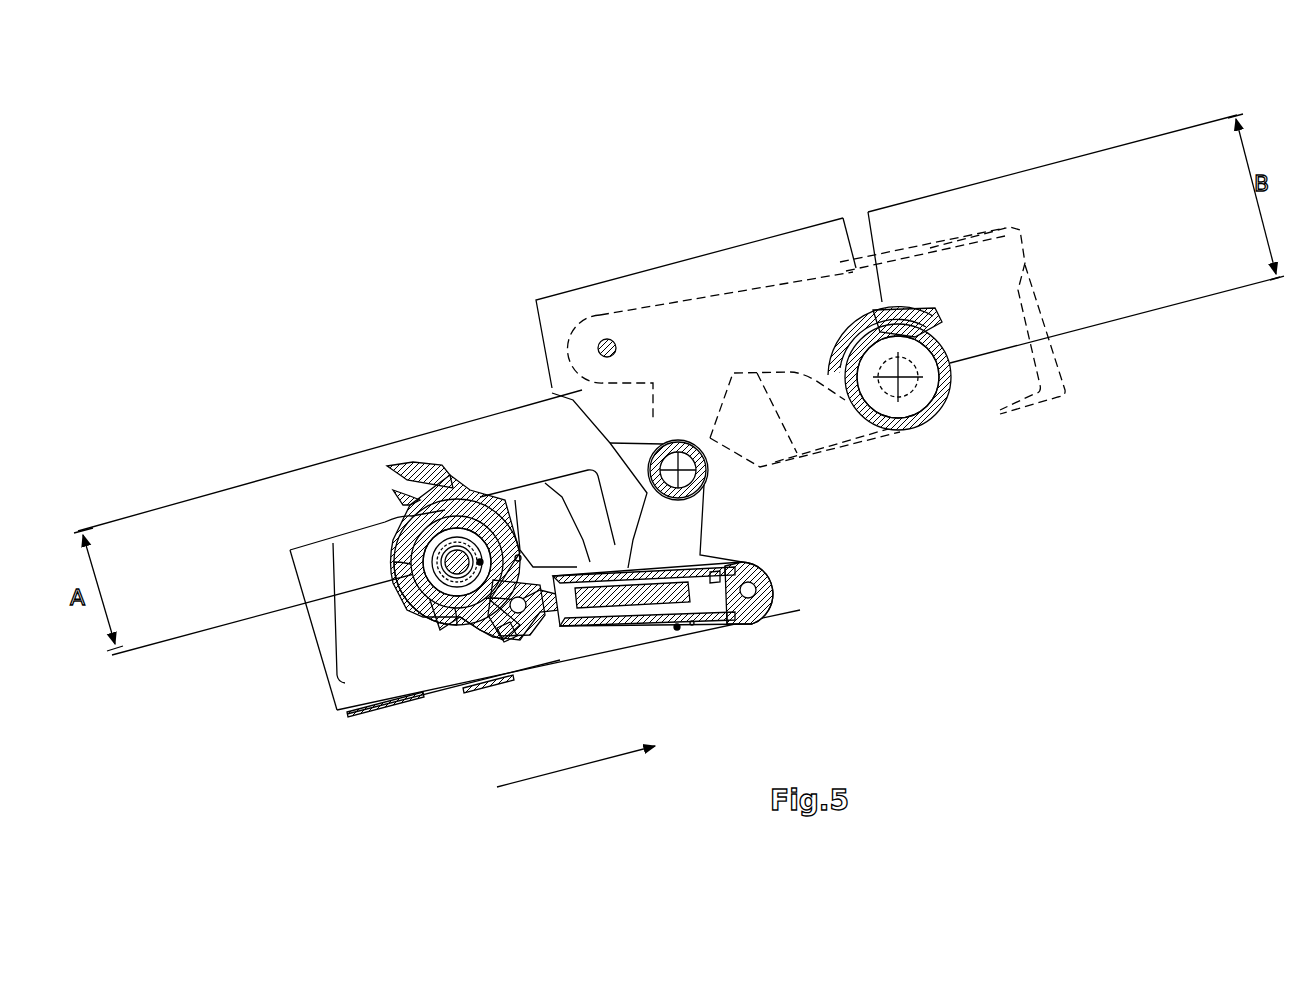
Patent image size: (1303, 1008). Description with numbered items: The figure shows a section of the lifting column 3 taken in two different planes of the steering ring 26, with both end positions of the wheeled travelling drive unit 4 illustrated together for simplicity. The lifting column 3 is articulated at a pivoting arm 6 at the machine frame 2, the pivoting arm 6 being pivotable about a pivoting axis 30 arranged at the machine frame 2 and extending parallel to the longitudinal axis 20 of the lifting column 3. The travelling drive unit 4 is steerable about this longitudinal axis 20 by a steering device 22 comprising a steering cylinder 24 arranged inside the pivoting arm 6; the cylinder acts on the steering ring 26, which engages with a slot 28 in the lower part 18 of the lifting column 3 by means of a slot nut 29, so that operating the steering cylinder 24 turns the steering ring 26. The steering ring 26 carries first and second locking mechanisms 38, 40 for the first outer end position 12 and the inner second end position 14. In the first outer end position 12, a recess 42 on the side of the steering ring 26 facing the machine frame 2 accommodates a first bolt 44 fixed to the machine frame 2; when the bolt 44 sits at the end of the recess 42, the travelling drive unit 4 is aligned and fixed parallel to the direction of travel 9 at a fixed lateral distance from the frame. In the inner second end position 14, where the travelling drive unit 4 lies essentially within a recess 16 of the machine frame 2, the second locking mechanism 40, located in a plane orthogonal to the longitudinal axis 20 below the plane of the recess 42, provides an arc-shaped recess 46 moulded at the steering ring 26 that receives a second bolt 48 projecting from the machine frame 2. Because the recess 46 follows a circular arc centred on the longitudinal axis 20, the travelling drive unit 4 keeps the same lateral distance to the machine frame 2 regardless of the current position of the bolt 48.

The machine frame 2 is at (436, 365).
The lifting column 3 is at (420, 625).
The travelling drive unit 4 is at (327, 633).
The pivoting arm 6 is at (672, 537).
The direction of travel 9 is at (565, 768).
The first outer end position 12 is at (755, 647).
The inner second end position 14 is at (560, 250).
The recess 16 is at (692, 293).
The lower part 18 is at (504, 536).
The longitudinal axis 20 is at (905, 400).
The steering device 22 is at (582, 679).
The steering cylinder 24 is at (665, 632).
The steering ring 26 is at (950, 390).
The slot 28 is at (453, 618).
The slot nut 29 is at (480, 628).
The pivoting axis 30 is at (708, 480).
The first locking mechanism 38 is at (378, 478).
The second locking mechanism 40 is at (803, 317).
The recess 42 is at (398, 483).
The first bolt 44 is at (452, 480).
The arc-shaped recess 46 is at (839, 362).
The bolt 48 is at (888, 298).